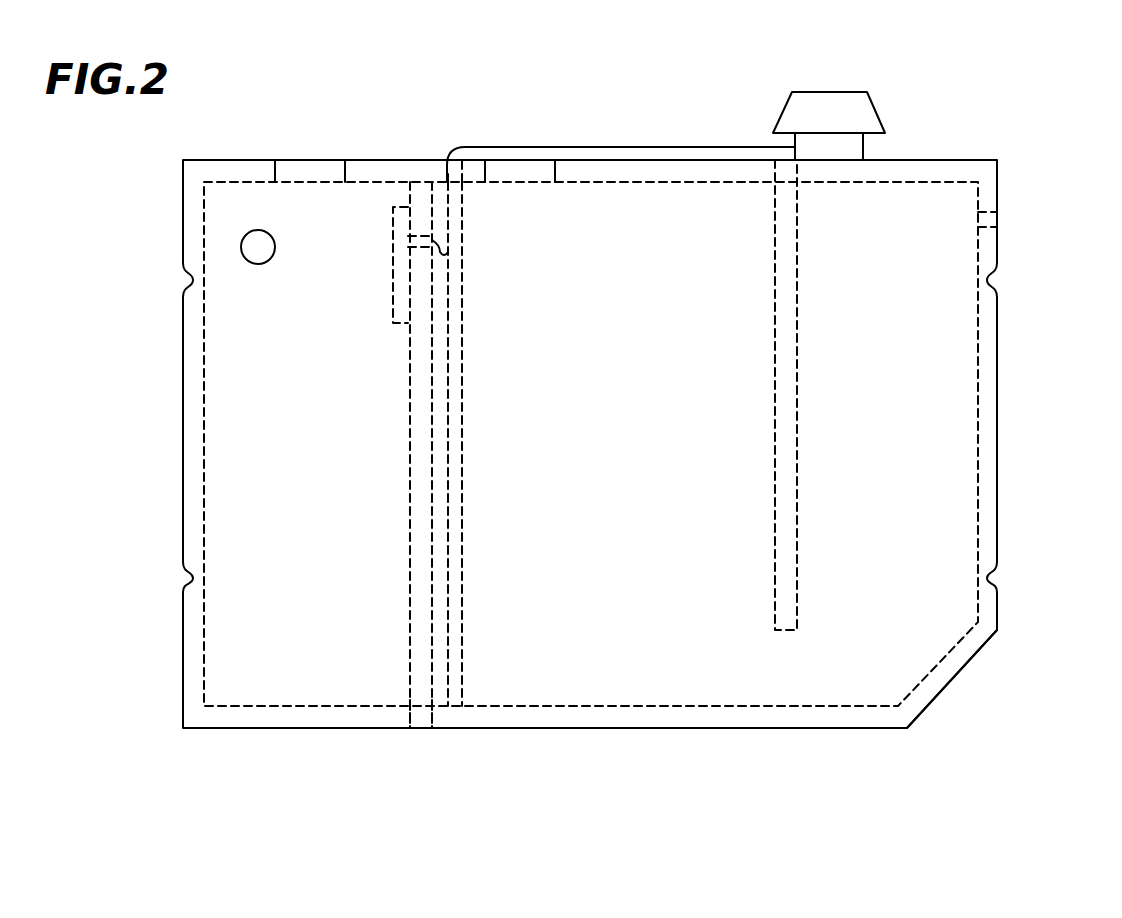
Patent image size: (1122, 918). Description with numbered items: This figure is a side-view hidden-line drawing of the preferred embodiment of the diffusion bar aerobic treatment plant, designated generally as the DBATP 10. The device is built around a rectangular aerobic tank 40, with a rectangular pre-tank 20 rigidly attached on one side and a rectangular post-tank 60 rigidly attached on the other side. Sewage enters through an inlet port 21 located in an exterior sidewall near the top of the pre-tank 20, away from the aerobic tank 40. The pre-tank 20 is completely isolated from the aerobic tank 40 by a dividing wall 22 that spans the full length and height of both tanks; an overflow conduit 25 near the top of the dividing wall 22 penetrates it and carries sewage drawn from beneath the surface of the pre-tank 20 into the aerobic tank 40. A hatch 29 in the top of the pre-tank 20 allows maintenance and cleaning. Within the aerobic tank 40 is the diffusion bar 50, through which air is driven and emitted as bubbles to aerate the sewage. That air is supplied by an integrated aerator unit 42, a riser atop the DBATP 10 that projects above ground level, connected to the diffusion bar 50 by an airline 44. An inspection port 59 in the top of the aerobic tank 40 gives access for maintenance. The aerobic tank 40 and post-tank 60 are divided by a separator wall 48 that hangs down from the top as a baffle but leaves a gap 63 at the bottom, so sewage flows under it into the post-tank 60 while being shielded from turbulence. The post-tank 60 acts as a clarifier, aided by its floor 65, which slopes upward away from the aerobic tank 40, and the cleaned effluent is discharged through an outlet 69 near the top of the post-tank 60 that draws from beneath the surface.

The DBATP 10 is at (503, 803).
The pre-tank 20 is at (329, 683).
The inlet port 21 is at (258, 230).
The dividing wall 22 is at (416, 688).
The overflow conduit 25 is at (393, 245).
The hatch 29 is at (302, 164).
The aerobic tank 40 is at (652, 681).
The aerator unit 42 is at (880, 110).
The airline 44 is at (670, 147).
The separator wall 48 is at (775, 549).
The diffusion bar 50 is at (460, 676).
The inspection port 59 is at (525, 167).
The post-tank 60 is at (912, 495).
The gap 63 is at (785, 667).
The floor 65 is at (948, 672).
The outlet 69 is at (1000, 222).